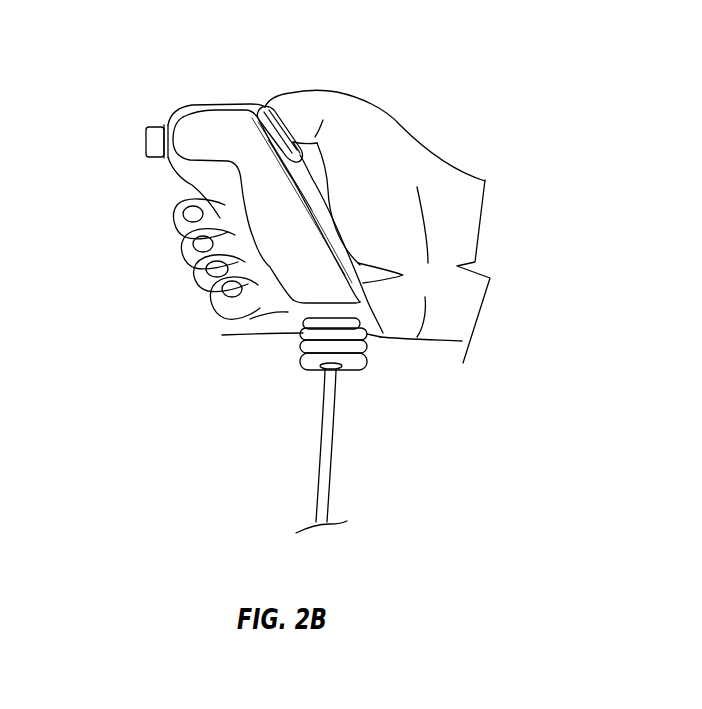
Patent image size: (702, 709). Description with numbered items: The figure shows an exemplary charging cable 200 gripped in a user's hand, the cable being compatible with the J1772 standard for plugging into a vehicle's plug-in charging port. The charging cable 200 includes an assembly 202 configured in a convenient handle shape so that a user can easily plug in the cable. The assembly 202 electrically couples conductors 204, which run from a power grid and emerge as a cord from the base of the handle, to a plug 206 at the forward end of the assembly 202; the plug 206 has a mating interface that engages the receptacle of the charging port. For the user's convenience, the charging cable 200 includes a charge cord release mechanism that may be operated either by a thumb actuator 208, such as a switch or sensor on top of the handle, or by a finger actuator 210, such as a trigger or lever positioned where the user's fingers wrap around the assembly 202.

The charging cable 200 is at (178, 59).
The assembly 202 is at (283, 313).
The conductors 204 is at (323, 411).
The plug 206 is at (144, 143).
The thumb actuator 208 is at (266, 104).
The finger actuator 210 is at (188, 238).